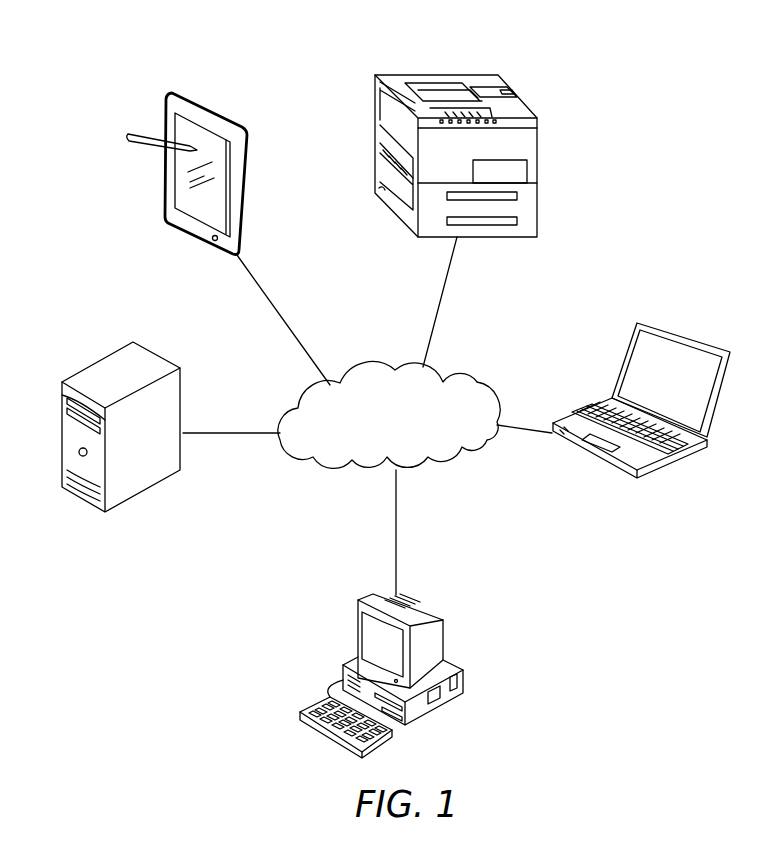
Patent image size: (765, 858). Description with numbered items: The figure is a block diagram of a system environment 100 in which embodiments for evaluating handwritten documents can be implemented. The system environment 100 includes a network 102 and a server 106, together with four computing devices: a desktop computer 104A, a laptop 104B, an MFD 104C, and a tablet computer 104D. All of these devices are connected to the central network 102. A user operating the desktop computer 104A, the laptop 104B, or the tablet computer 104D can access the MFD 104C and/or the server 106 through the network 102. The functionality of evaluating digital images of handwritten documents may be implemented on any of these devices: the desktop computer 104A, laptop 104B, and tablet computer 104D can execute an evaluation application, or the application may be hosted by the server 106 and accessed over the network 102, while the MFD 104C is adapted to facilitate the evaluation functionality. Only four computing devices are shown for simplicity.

The system environment 100 is at (570, 46).
The network 102 is at (477, 382).
The desktop computer 104A is at (443, 638).
The laptop 104B is at (673, 330).
The MFD 104C is at (537, 157).
The tablet computer 104D is at (215, 110).
The server 106 is at (165, 355).